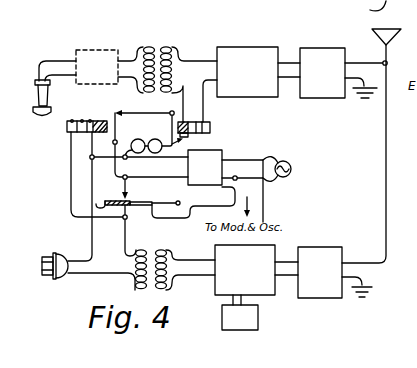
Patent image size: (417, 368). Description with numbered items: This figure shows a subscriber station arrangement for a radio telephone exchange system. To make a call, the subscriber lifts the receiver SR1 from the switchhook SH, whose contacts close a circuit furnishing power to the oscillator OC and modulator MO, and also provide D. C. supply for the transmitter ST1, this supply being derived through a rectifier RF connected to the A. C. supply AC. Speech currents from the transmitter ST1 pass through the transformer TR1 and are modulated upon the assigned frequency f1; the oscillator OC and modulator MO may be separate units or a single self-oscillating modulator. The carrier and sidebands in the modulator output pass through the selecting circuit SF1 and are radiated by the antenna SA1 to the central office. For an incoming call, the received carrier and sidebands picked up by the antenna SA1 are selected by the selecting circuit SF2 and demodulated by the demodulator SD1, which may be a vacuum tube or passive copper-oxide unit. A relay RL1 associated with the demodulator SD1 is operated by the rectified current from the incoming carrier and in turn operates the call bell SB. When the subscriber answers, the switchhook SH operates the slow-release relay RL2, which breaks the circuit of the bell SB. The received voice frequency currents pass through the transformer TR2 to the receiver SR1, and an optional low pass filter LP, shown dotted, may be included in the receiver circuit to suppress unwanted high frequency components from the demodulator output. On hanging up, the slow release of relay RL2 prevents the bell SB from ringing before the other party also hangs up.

The low pass filter LP is at (97, 50).
The receiver SR1 is at (28, 98).
The transformer TR2 is at (156, 46).
The demodulator SD1 is at (243, 50).
The selecting circuit SF2 is at (316, 48).
The antenna SA1 is at (371, 146).
The slow-release relay RL2 is at (73, 120).
The call bell SB is at (125, 141).
The relay RL1 is at (211, 129).
The rectifier RF is at (215, 153).
The A. C. supply AC is at (292, 169).
The switchhook SH is at (119, 200).
The transformer TR1 is at (153, 247).
The selecting circuit SF1 is at (336, 249).
The modulator MO is at (263, 291).
The oscillator OC is at (233, 326).
The assigned frequency f1 is at (273, 340).
The transmitter ST1 is at (40, 265).